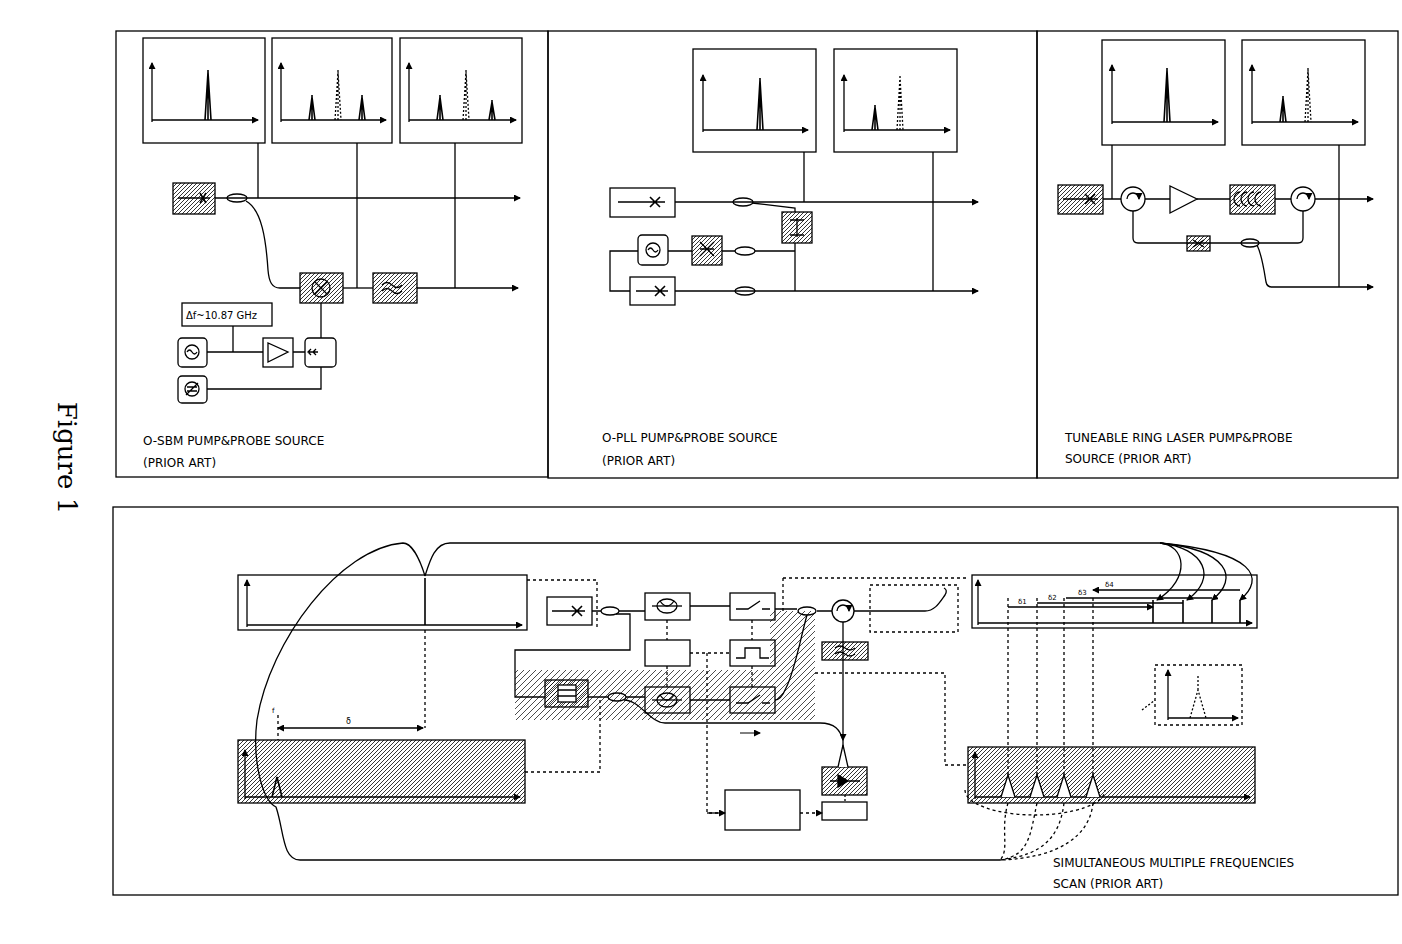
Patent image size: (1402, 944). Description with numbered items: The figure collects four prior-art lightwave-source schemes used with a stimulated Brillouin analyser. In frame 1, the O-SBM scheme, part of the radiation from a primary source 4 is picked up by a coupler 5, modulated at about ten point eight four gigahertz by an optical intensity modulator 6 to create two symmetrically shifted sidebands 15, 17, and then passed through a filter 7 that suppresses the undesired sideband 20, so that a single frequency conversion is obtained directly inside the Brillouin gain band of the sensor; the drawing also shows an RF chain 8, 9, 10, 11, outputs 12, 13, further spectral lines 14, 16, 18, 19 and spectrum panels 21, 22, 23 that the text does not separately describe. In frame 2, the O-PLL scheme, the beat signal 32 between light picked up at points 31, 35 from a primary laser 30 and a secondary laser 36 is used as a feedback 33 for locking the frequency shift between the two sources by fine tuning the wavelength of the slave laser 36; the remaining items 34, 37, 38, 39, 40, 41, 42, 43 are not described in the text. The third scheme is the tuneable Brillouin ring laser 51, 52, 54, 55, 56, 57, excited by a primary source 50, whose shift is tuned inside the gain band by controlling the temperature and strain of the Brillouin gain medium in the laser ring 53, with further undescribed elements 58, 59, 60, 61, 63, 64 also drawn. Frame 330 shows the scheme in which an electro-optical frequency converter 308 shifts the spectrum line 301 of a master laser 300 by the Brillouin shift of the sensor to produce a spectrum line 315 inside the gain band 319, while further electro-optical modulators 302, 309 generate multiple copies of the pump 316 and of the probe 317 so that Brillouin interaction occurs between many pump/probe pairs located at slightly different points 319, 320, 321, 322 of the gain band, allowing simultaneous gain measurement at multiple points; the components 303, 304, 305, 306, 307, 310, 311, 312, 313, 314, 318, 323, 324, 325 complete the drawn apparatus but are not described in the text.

The frame 1 is at (548, 40).
The frame 2 is at (1008, 68).
The primary source 4 is at (190, 215).
The coupler 5 is at (237, 203).
The optical modulator 6 is at (318, 273).
The filter 7 is at (388, 273).
The RF oscillator 8 is at (178, 345).
The RF amplifier 9 is at (287, 338).
The RF source 10 is at (178, 382).
The RF mixer 11 is at (330, 338).
The pump output 12 is at (520, 198).
The probe output 13 is at (518, 288).
The pump spectral line 14 is at (211, 78).
The sideband 15 is at (312, 93).
The suppressed carrier 16 is at (340, 82).
The sideband 17 is at (364, 94).
The probe Stokes line 18 is at (440, 93).
The filtered carrier 19 is at (468, 82).
The undesired sideband 20 is at (494, 98).
The pump spectrum 21 is at (170, 145).
The side bands spectrum 22 is at (330, 145).
The probe spectrum 23 is at (432, 145).
The primary laser 30 is at (640, 188).
The pick-up coupler 31 is at (746, 198).
The beat signal 32 is at (748, 247).
The feedback 33 is at (638, 240).
The phase detector 34 is at (712, 265).
The pick-up coupler 35 is at (748, 287).
The secondary laser 36 is at (676, 303).
The photodetector 37 is at (812, 237).
The pump spectral line 38 is at (763, 86).
The probe Stokes line 39 is at (876, 103).
The pump spectrum 40 is at (752, 153).
The probe spectrum 41 is at (895, 153).
The pump output 42 is at (978, 202).
The probe output 43 is at (978, 291).
The primary source 50 is at (1062, 214).
The tuneable Brillouin ring laser 51 is at (1126, 209).
The tuneable Brillouin ring laser 52 is at (1186, 192).
The laser ring 53 is at (1270, 190).
The tuneable Brillouin ring laser 54 is at (1312, 192).
The tuneable Brillouin ring laser 55 is at (1305, 212).
The tuneable Brillouin ring laser 56 is at (1245, 247).
The tuneable Brillouin ring laser 57 is at (1190, 251).
The pump output 58 is at (1373, 199).
The probe output 59 is at (1373, 287).
The pump spectral line 60 is at (1170, 78).
The probe Stokes line 61 is at (1284, 94).
The pump spectrum 63 is at (1160, 146).
The probe spectrum 64 is at (1300, 146).
The master laser 300 is at (574, 590).
The spectrum line 301 is at (500, 575).
The modulator 302 is at (688, 593).
The optical switch 303 is at (760, 593).
The optical coupler 304 is at (812, 614).
The optical circulator 305 is at (850, 620).
The sensing fiber 306 is at (905, 613).
The fiber end 307 is at (948, 592).
The electro-optical frequency converter 308 is at (650, 687).
The modulator 309 is at (548, 707).
The optical switch 310 is at (775, 706).
The direct digital synthesizer 311 is at (690, 645).
The pulse generator 312 is at (730, 645).
The optical filter 313 is at (868, 655).
The photodetector 314 is at (867, 770).
The spectrum line 315 is at (525, 755).
The pump copies 316 is at (1120, 575).
The probe copies 317 is at (1185, 747).
The Brillouin gain profile 318 is at (1232, 665).
The Brillouin gain band 319 is at (282, 785).
The gain band point 320 is at (997, 786).
The gain band point 321 is at (1029, 784).
The gain band point 322 is at (1057, 784).
The Brillouin gain peak 323 is at (1086, 784).
The analog to digital converter 324 is at (867, 811).
The personal computer 325 is at (765, 790).
The frame 330 is at (1370, 507).